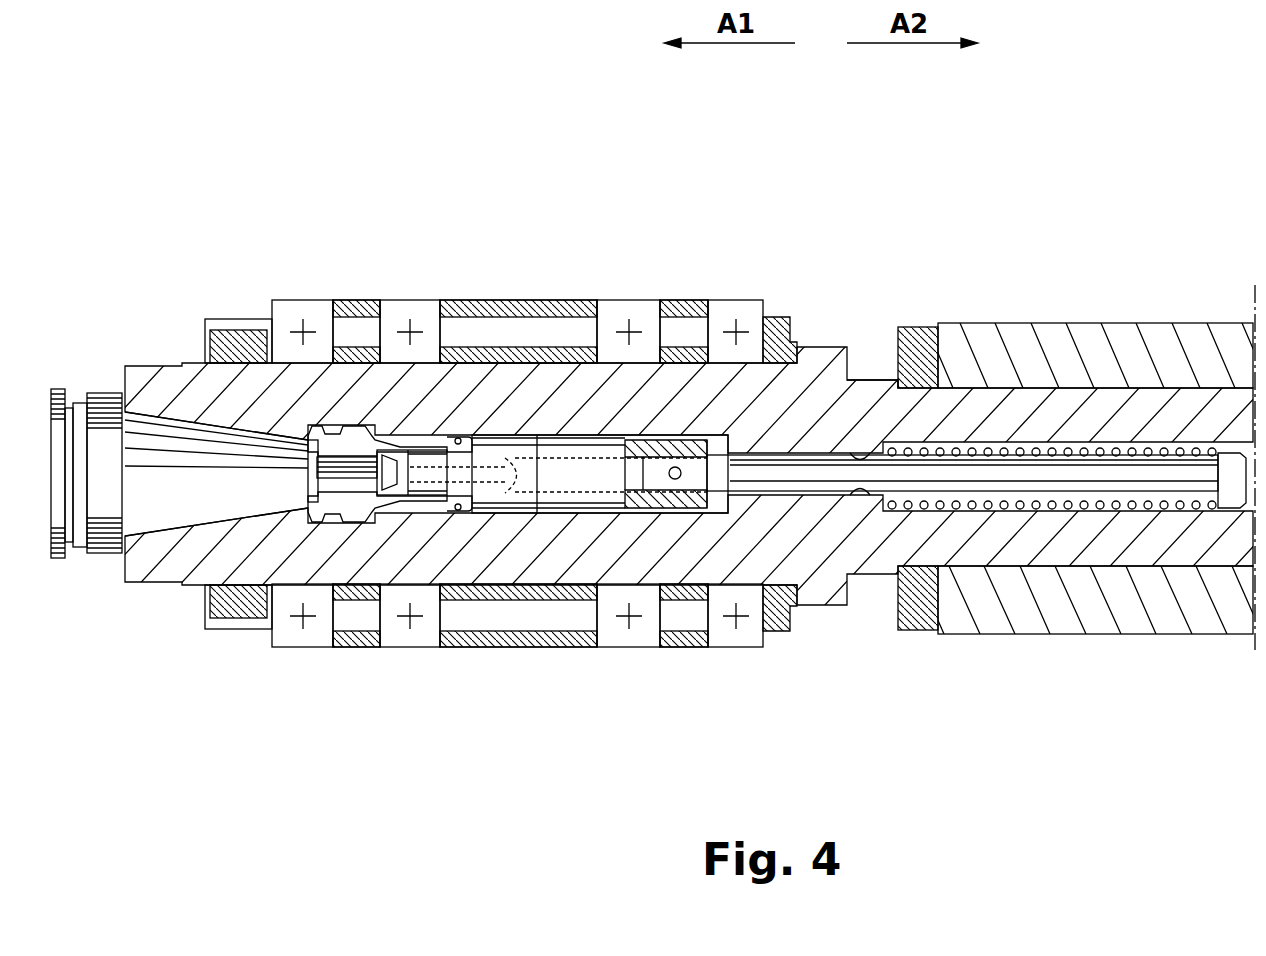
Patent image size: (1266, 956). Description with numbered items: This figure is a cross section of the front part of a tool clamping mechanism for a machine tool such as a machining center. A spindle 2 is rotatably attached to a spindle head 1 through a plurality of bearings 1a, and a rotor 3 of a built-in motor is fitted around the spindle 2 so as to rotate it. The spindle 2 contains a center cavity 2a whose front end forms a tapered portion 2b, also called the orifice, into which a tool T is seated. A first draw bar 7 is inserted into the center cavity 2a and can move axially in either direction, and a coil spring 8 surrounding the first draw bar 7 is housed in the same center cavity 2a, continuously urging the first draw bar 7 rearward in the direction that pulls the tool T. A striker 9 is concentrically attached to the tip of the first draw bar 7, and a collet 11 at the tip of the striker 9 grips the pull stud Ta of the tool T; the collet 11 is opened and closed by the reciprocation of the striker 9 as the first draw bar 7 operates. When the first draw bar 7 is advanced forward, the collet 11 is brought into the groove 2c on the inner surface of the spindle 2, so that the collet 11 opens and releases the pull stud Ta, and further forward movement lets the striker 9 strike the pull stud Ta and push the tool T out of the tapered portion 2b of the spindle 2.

The spindle head 1 is at (852, 338).
The bearings 1a is at (307, 310).
The spindle 2 is at (873, 400).
The center cavity 2a is at (900, 387).
The tapered portion (orifice) 2b is at (152, 418).
The groove 2c is at (368, 515).
The rotor 3 is at (1113, 357).
The first draw bar 7 is at (817, 492).
The coil spring 8 is at (938, 507).
The striker 9 is at (520, 500).
The collet 11 is at (423, 500).
The tool T is at (57, 532).
The pull stud Ta is at (348, 478).